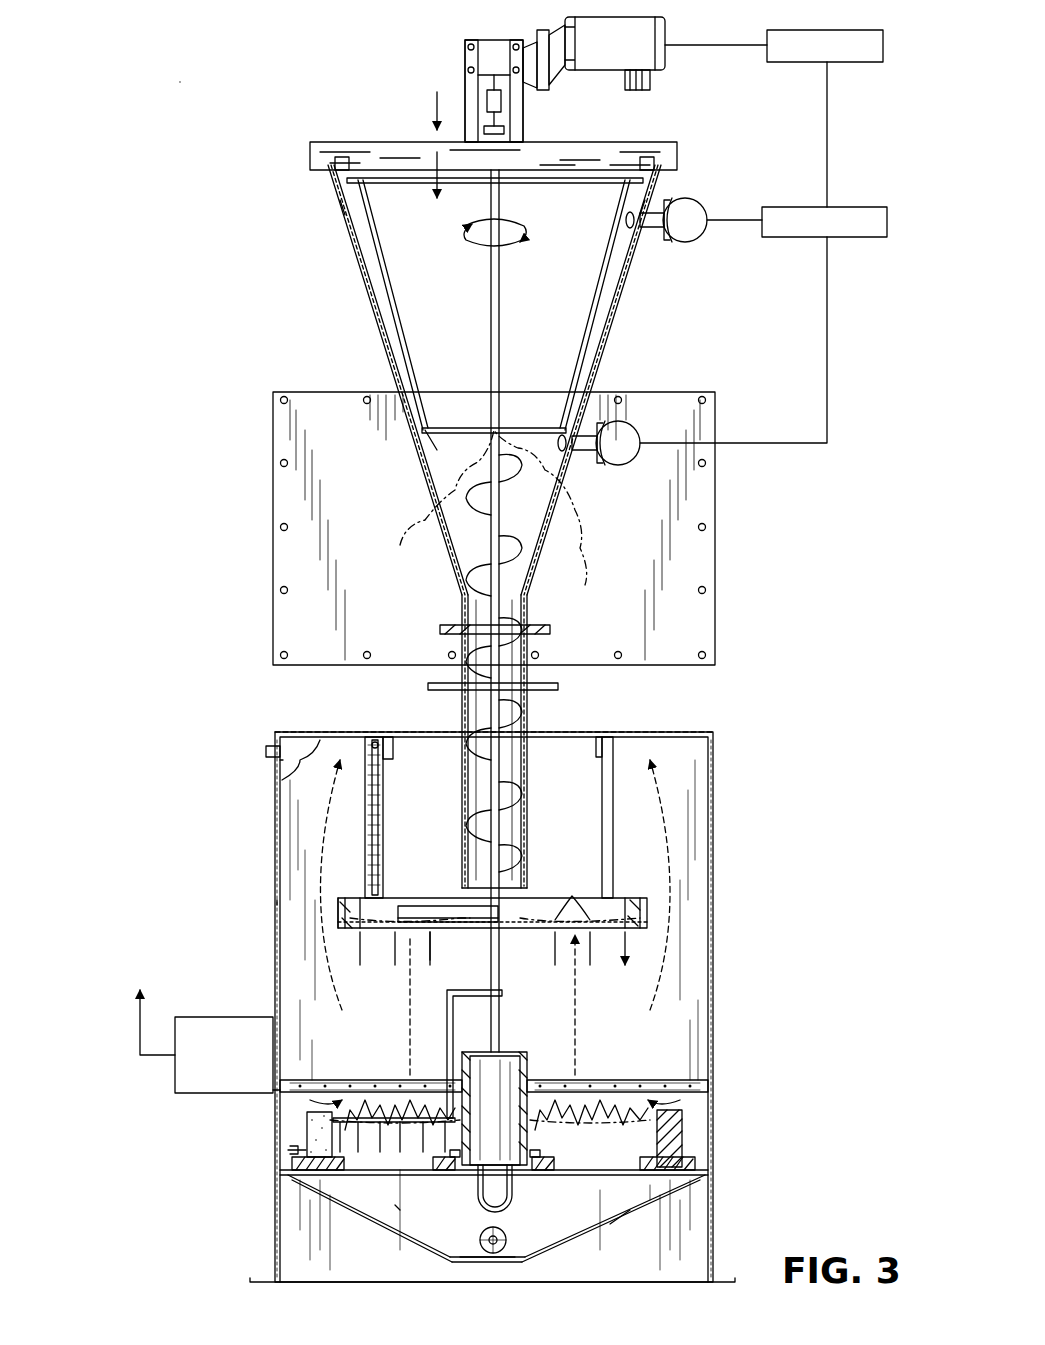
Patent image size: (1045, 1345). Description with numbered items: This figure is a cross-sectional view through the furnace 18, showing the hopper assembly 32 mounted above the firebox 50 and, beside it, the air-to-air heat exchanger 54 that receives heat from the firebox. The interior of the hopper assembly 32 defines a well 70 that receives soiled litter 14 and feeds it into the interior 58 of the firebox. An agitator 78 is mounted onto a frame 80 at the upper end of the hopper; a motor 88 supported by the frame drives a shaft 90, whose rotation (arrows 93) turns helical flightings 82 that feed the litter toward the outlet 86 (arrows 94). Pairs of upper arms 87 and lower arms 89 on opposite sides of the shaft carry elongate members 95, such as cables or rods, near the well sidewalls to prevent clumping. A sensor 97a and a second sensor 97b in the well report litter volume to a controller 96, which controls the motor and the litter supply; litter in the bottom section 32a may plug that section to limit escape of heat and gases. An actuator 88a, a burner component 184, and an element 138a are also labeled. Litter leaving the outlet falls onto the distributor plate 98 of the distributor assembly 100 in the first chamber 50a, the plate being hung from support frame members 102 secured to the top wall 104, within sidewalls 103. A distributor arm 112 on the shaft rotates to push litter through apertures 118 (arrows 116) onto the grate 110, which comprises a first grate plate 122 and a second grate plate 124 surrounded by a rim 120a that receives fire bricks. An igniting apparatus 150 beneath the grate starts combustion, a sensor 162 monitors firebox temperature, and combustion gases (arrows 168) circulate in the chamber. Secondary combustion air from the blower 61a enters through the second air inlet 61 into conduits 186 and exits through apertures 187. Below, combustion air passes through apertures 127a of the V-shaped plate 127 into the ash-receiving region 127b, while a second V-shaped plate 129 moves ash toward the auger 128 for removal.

The furnace 18 is at (178, 80).
The agitator 78 is at (463, 55).
The motor 88 is at (668, 62).
The actuator 88a is at (838, 62).
The arrows 94 is at (432, 103).
The frame 80 is at (332, 142).
The upper arms 87 is at (558, 178).
The shaft 90 is at (500, 280).
The arrows 93 is at (480, 238).
The well 70 is at (392, 262).
The hopper assembly 32 is at (372, 318).
The elongate members 95 is at (400, 355).
The soiled litter 14 is at (535, 316).
The air-to-air heat exchanger 54 is at (715, 392).
The sensor 97a is at (690, 200).
The second sensor 97b is at (630, 428).
The controller 96 is at (846, 237).
The lower arms 89 is at (448, 438).
The helical flightings 82 is at (465, 572).
The bottom section 32a is at (527, 778).
The outlet 86 is at (508, 882).
The firebox 50 is at (278, 730).
The interior 58 is at (708, 787).
The top wall 104 is at (690, 730).
The first chamber 50a is at (303, 800).
The sensor 162 is at (266, 752).
The arrows 168 is at (305, 840).
The sidewalls 103 is at (277, 898).
The support frame members 102 is at (365, 782).
The distributor assembly 100 is at (650, 898).
The distributor arm 112 is at (442, 904).
The apertures 118 is at (575, 916).
The distributor plate 98 is at (352, 898).
The arrows 116 is at (430, 952).
The blower 61a is at (243, 1017).
The second air inlet 61 is at (282, 1080).
The conduits 186 is at (708, 1080).
The apertures 187 is at (415, 1095).
The burner 184 is at (480, 1052).
The first grate plate 122 is at (305, 1125).
The igniter 138a is at (300, 1150).
The grate 110 is at (640, 1158).
The rim 120a is at (670, 1150).
The second grate plate 124 is at (330, 1180).
The apertures 127a is at (315, 1188).
The V-shaped plate 127 is at (590, 1226).
The ash-receiving region 127b is at (529, 1228).
The second V-shaped plate 129 is at (590, 1208).
The igniting apparatus 150 is at (395, 1208).
The auger 128 is at (478, 1243).